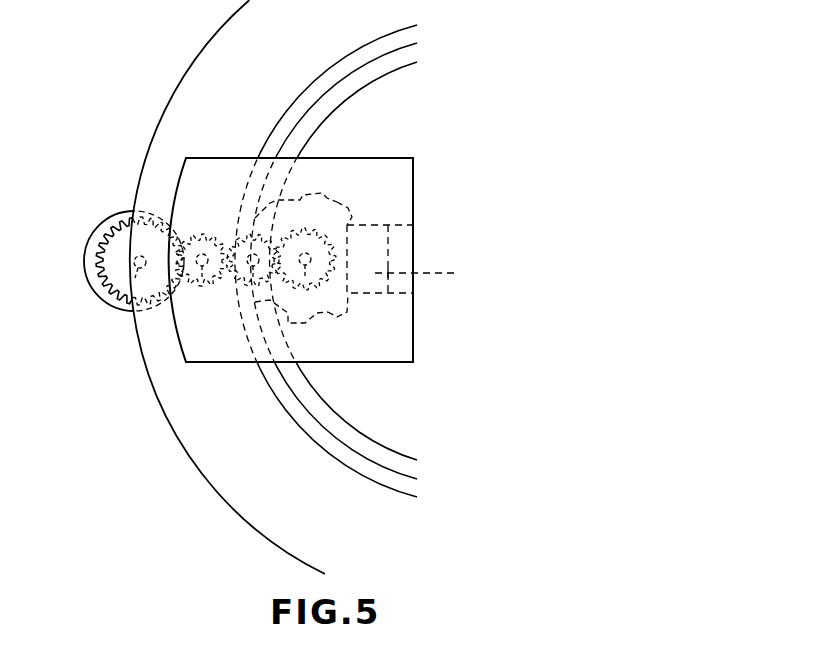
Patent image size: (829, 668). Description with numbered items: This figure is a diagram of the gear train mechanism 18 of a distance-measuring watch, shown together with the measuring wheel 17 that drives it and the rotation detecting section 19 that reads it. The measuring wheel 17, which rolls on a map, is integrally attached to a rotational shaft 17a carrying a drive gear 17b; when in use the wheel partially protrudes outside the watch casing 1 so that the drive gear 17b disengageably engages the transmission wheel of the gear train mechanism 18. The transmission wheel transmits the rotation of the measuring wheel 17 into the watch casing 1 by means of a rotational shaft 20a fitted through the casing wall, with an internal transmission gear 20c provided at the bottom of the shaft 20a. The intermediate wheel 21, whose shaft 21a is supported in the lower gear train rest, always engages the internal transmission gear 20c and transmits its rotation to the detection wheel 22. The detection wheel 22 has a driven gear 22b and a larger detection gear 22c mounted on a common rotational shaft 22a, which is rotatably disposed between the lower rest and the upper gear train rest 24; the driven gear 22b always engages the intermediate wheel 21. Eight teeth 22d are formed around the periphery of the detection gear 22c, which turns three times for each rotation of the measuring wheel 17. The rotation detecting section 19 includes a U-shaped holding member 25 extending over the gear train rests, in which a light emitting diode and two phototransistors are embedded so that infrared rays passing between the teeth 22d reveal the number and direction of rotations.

The watch casing 1 is at (193, 59).
The measuring wheel 17 is at (123, 252).
The rotational shaft 17a is at (119, 300).
The drive gear 17b is at (103, 227).
The gear train mechanism 18 is at (392, 327).
The rotation detecting section 19 is at (398, 244).
The rotational shaft 20a is at (203, 288).
The internal transmission gear 20c is at (203, 233).
The intermediate wheel 21 is at (242, 216).
The shaft 21a is at (231, 300).
The detection wheel 22 is at (316, 218).
The rotational shaft 22a is at (312, 327).
The driven gear 22b is at (365, 206).
The detection gear 22c is at (310, 195).
The teeth 22d is at (357, 326).
The upper gear train rest 24 is at (408, 171).
The holding member 25 is at (430, 275).